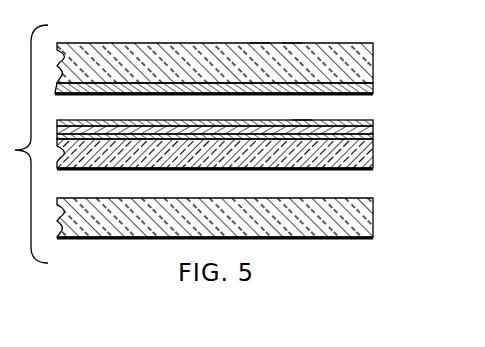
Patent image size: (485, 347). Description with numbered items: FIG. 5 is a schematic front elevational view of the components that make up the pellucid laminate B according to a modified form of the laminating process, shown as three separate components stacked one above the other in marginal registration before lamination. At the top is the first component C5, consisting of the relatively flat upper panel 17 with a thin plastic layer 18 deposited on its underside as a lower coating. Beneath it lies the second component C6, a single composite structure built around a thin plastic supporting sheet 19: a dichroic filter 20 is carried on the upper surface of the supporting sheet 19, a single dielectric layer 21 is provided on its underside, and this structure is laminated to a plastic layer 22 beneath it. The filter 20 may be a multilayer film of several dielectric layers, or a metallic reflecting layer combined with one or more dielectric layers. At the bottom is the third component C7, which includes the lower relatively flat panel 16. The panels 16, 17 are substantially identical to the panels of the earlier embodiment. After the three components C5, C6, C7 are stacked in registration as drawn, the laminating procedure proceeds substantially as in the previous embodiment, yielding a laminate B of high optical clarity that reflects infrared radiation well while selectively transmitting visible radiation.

The flat panel 16 is at (374, 222).
The upper panel 17 is at (368, 43).
The thin plastic layer 18 is at (373, 88).
The thin plastic supporting sheet 19 is at (373, 129).
The dichroic filter 20 is at (374, 120).
The dielectric layer 21 is at (373, 137).
The plastic layer 22 is at (373, 168).
The laminate B is at (260, 42).
The first component C5 is at (292, 42).
The second component C6 is at (302, 119).
The third component C7 is at (348, 240).